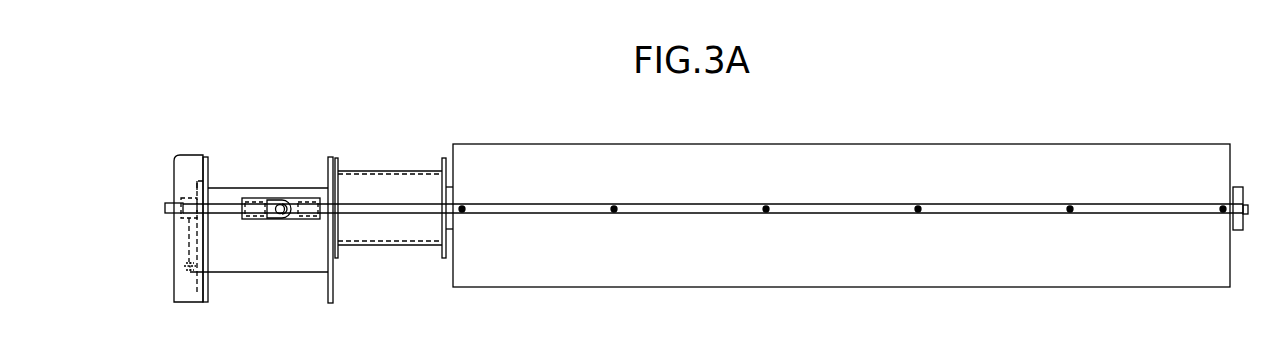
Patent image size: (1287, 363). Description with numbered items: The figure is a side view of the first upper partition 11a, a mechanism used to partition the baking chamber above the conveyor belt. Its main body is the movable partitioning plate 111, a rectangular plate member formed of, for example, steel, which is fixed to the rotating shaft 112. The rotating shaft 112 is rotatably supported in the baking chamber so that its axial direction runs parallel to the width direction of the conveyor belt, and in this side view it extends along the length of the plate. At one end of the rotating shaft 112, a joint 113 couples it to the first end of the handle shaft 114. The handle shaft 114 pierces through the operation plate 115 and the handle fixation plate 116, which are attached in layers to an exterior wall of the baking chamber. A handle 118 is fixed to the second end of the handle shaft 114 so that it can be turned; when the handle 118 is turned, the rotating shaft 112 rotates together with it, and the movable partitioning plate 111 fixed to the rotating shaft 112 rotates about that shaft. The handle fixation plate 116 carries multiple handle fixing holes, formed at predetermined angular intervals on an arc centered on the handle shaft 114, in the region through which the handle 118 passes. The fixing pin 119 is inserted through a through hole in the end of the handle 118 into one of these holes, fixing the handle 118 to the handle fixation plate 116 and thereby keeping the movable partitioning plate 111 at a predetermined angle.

The first upper partition 11a is at (166, 102).
The movable partitioning plate 111 is at (735, 157).
The rotating shaft 112 is at (873, 208).
The joint 113 is at (270, 198).
The handle shaft 114 is at (165, 208).
The operation plate 115 is at (174, 168).
The handle fixation plate 116 is at (197, 295).
The handle 118 is at (178, 237).
The fixing pin 119 is at (178, 265).